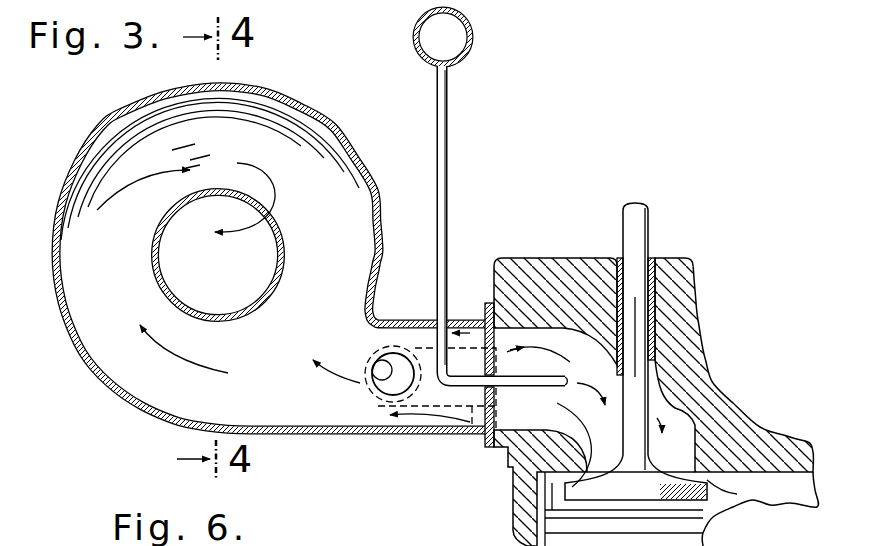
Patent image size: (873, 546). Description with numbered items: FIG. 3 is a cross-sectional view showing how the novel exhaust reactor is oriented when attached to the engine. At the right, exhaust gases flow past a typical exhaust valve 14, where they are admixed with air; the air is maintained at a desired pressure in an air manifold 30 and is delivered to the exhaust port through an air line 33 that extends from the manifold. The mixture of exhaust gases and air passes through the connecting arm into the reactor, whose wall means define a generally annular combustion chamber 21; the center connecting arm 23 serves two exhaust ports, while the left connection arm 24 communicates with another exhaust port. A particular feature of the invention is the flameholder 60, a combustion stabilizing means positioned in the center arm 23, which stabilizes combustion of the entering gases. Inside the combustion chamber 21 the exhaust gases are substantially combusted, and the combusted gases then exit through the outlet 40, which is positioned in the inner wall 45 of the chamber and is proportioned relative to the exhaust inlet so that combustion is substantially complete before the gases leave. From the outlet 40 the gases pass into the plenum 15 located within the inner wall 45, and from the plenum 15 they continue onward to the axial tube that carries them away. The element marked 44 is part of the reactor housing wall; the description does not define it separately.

The exhaust valve 14 is at (648, 240).
The plenum 15 is at (225, 283).
The annular combustion chamber 21 is at (350, 97).
The center connecting arm 23 is at (478, 440).
The left connection arm 24 is at (470, 439).
The air manifold 30 is at (473, 53).
The air line 33 is at (448, 193).
The exhaust outlet 40 is at (282, 227).
The housing wall 44 is at (360, 165).
The inner wall 45 is at (225, 327).
The flameholder 60 is at (477, 338).